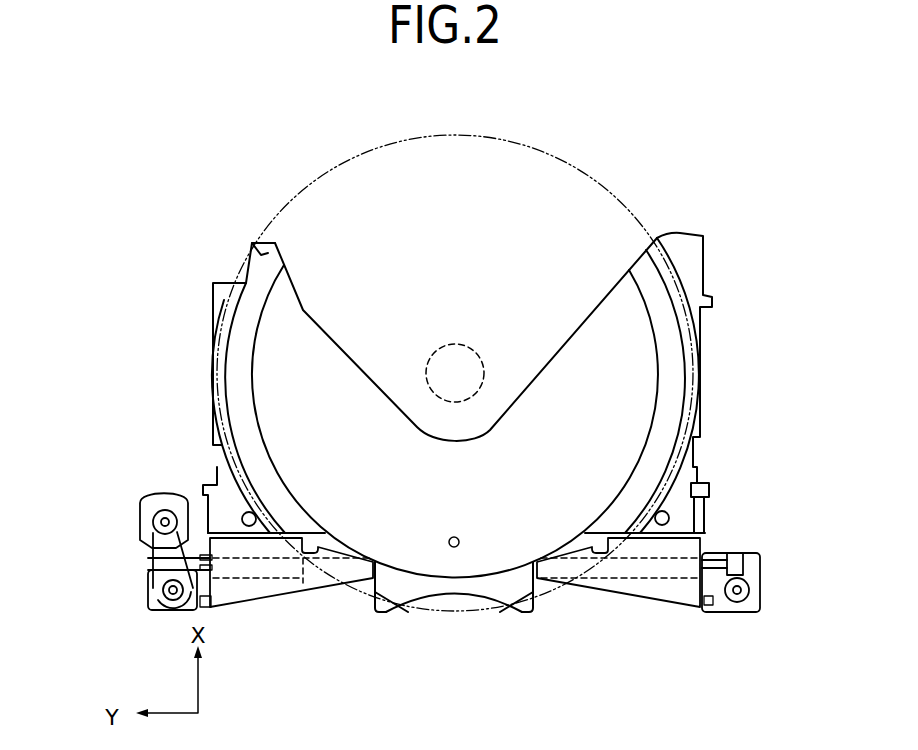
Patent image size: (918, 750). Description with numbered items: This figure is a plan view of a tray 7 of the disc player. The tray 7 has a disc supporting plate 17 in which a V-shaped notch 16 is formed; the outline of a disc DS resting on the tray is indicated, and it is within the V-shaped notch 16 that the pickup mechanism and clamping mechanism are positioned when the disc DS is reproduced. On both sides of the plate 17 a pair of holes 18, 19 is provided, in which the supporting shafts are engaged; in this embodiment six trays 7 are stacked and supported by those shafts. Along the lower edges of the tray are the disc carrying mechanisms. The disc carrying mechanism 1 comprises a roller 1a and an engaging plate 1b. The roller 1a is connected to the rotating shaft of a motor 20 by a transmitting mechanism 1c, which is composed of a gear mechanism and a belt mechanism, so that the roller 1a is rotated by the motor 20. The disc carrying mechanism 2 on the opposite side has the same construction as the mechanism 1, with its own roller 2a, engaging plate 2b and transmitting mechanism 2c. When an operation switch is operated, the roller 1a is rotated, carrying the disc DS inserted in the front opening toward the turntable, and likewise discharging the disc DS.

The disc DS is at (614, 197).
The tray 7 is at (702, 370).
The disc supporting plate 17 is at (335, 353).
The V-shaped notch 16 is at (496, 356).
The hole 18 is at (242, 515).
The hole 19 is at (669, 518).
The motor 20 is at (138, 522).
The disc carrying mechanism 1 is at (231, 600).
The roller 1a is at (265, 518).
The engaging plate 1b is at (235, 593).
The transmitting mechanism 1c is at (150, 606).
The disc carrying mechanism 2 is at (669, 594).
The roller 2a is at (645, 518).
The engaging plate 2b is at (678, 593).
The transmitting mechanism 2c is at (755, 603).